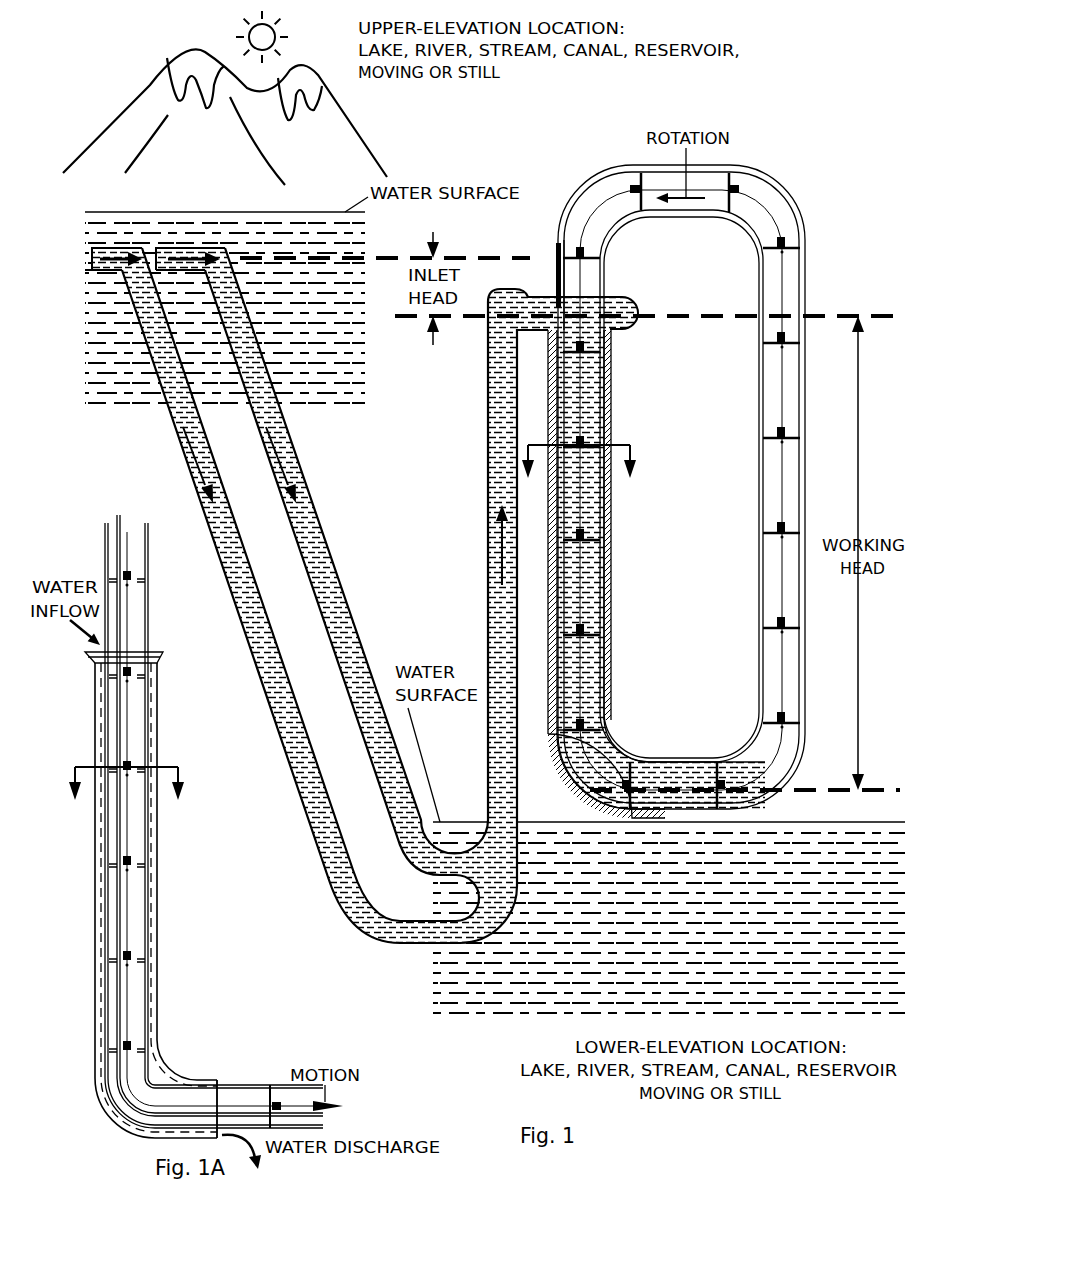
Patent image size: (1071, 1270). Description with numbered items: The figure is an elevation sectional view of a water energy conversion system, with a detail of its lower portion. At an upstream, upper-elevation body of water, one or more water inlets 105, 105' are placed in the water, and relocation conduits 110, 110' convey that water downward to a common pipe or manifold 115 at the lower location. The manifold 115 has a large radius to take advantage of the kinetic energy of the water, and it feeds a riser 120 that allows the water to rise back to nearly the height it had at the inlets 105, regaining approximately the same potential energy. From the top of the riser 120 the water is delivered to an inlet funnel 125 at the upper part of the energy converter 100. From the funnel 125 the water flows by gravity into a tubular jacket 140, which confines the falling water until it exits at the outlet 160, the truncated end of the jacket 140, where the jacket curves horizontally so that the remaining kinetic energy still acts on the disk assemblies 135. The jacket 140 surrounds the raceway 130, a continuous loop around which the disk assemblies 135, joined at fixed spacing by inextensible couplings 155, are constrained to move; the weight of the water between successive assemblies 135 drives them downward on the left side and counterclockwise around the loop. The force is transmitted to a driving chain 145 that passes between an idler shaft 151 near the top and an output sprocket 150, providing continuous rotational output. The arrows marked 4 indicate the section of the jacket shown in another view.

In FIG. 1, the energy converter 100 is at (800, 166).
In FIG. 1, the water inlet 105 is at (111, 220).
In FIG. 1, the water inlet 105' is at (167, 229).
In FIG. 1, the relocation conduit 110 is at (319, 595).
In FIG. 1, the relocation conduit 110' is at (346, 561).
In FIG. 1, the manifold 115 is at (480, 927).
In FIG. 1, the riser 120 is at (488, 607).
In FIG. 1, the inlet funnel 125 is at (630, 298).
In FIG. 1A, the inlet funnel 125 is at (163, 657).
In FIG. 1, the raceway 130 is at (807, 266).
In FIG. 1A, the raceway 130 is at (147, 571).
In FIG. 1, the disk assemblies 135 is at (636, 183).
In FIG. 1A, the disk assemblies 135 is at (130, 875).
In FIG. 1, the jacket 140 is at (611, 352).
In FIG. 1A, the jacket 140 is at (157, 675).
In FIG. 1, the driving chain 145 is at (555, 262).
In FIG. 1, the output sprocket 150 is at (548, 730).
In FIG. 1, the idler shaft 151 is at (558, 247).
In FIG. 1, the couplings 155 is at (778, 590).
In FIG. 1A, the couplings 155 is at (157, 1090).
In FIG. 1, the outlet 160 is at (673, 760).
In FIG. 1A, the outlet 160 is at (217, 1083).
In FIG. 1, the section line 4 is at (579, 473).
In FIG. 1A, the section line 4 is at (126, 794).